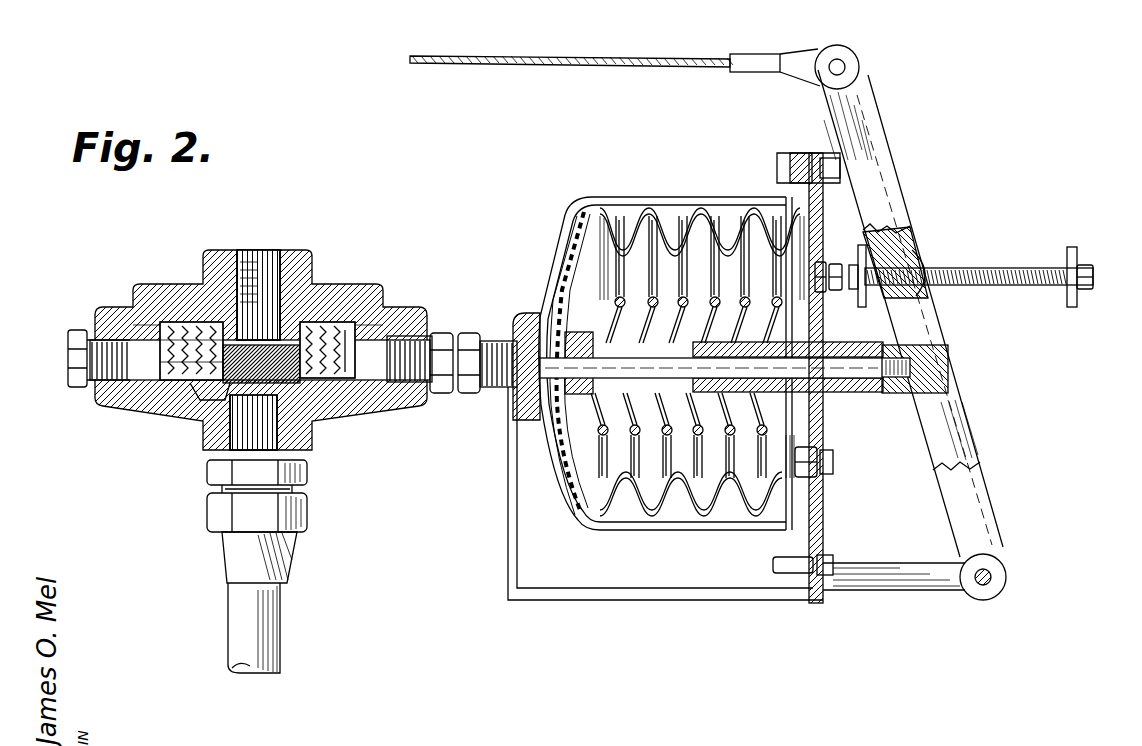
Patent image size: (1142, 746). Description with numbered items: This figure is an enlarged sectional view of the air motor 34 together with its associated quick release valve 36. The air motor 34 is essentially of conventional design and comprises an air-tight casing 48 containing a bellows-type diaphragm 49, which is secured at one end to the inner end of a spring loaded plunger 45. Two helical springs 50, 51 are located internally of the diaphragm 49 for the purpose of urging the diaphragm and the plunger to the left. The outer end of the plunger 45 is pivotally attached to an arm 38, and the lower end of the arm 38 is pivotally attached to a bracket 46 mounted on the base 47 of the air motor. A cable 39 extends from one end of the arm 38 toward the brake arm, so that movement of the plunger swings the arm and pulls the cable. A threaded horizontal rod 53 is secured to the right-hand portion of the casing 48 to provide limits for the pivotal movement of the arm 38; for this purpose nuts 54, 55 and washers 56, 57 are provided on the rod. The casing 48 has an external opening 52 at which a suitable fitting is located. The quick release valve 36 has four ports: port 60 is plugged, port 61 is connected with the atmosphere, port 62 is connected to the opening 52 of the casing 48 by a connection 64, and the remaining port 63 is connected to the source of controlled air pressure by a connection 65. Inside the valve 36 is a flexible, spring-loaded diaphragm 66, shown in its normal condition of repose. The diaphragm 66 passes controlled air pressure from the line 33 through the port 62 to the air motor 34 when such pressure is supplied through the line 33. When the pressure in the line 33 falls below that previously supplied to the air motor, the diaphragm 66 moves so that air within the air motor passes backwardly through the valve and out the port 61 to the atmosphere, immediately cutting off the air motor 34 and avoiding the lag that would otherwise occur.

The controlled pressure line 33 is at (237, 633).
The air motor 34 is at (598, 196).
The quick release valve 36 is at (200, 283).
The arm 38 is at (968, 494).
The cable 39 is at (548, 70).
The spring loaded plunger 45 is at (870, 396).
The bracket 46 is at (878, 598).
The base 47 is at (650, 602).
The casing 48 is at (690, 196).
The bellows-type diaphragm 49 is at (626, 518).
The helical spring 50 is at (698, 500).
The helical spring 51 is at (572, 292).
The external opening 52 is at (516, 330).
The threaded horizontal rod 53 is at (972, 267).
The nut 54 is at (857, 258).
The nut 55 is at (1086, 264).
The washer 56 is at (860, 296).
The washer 57 is at (1070, 306).
The port 60 is at (66, 355).
The port 61 is at (276, 258).
The port 62 is at (392, 336).
The port 63 is at (318, 418).
The connection 64 is at (464, 332).
The connection 65 is at (207, 514).
The diaphragm 66 is at (200, 396).